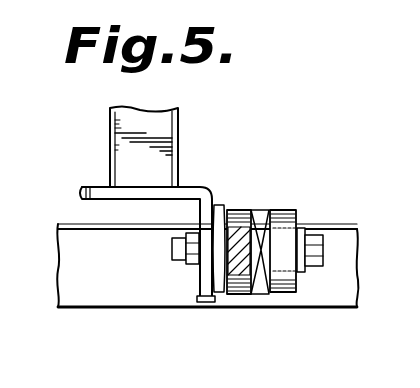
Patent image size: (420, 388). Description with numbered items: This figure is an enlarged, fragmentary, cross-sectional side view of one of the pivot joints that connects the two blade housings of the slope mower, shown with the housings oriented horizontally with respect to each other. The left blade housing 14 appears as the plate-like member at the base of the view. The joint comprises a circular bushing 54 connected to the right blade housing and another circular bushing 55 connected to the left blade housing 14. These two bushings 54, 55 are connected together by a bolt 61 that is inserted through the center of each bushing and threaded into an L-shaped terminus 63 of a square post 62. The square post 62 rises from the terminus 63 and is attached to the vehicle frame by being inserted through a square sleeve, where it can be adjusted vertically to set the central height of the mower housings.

The left blade housing 14 is at (108, 291).
The circular bushing 54 is at (292, 211).
The circular bushing 55 is at (236, 210).
The bolt 61 is at (172, 251).
The square post 62 is at (178, 130).
The L-shaped terminus 63 is at (94, 189).